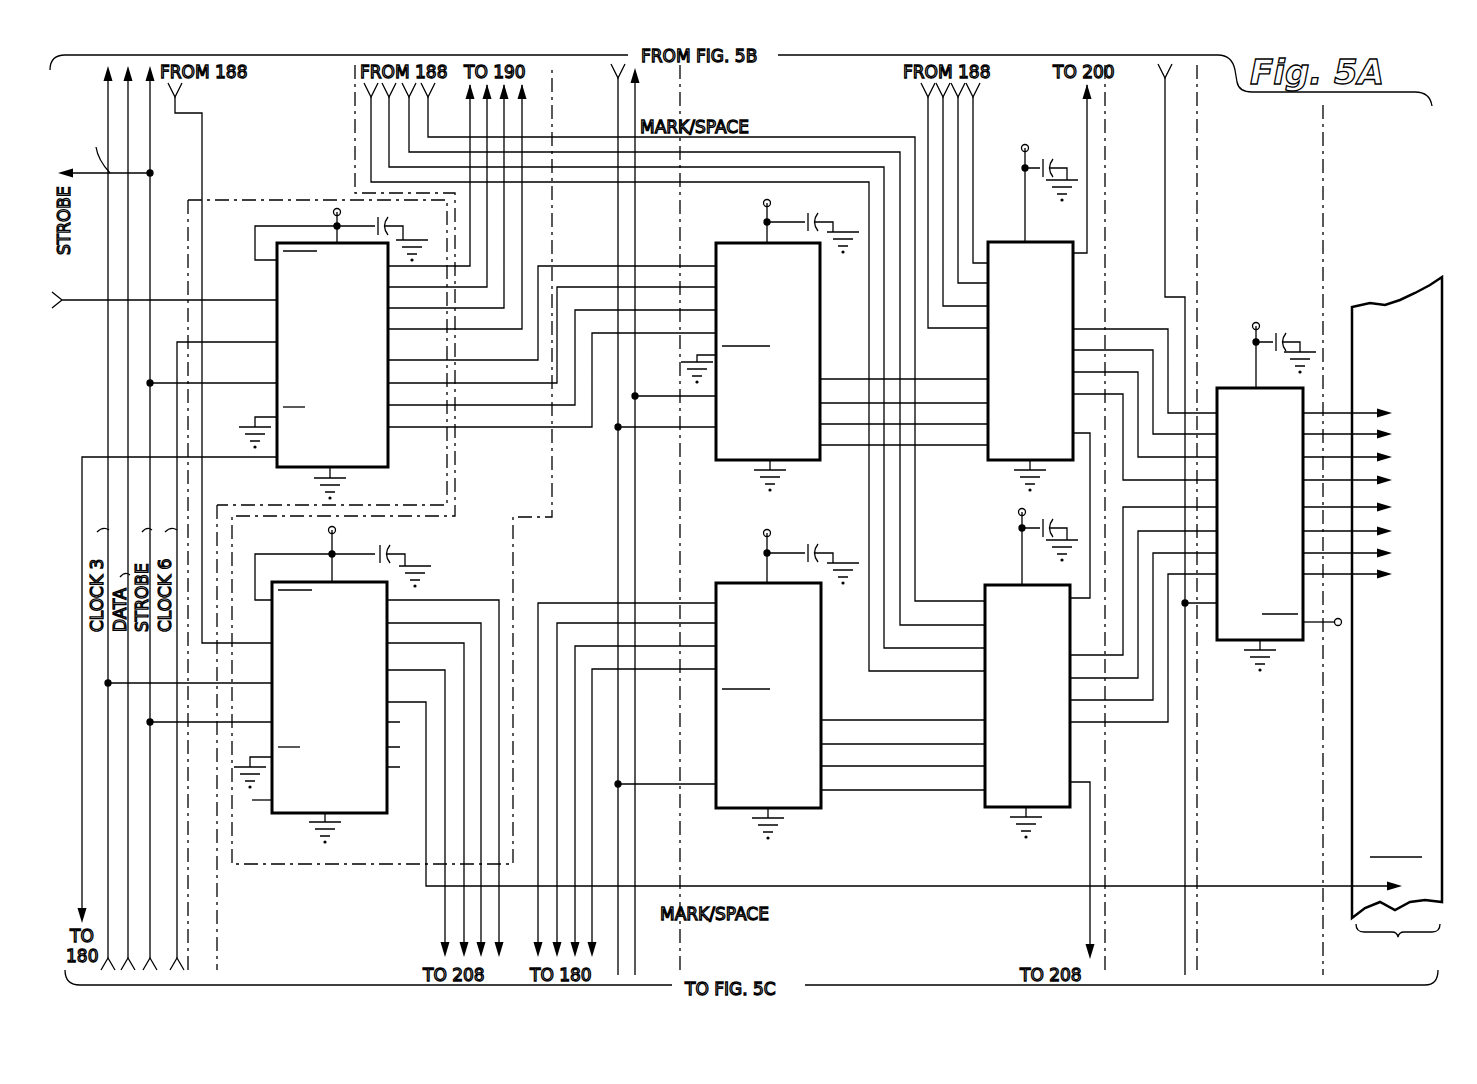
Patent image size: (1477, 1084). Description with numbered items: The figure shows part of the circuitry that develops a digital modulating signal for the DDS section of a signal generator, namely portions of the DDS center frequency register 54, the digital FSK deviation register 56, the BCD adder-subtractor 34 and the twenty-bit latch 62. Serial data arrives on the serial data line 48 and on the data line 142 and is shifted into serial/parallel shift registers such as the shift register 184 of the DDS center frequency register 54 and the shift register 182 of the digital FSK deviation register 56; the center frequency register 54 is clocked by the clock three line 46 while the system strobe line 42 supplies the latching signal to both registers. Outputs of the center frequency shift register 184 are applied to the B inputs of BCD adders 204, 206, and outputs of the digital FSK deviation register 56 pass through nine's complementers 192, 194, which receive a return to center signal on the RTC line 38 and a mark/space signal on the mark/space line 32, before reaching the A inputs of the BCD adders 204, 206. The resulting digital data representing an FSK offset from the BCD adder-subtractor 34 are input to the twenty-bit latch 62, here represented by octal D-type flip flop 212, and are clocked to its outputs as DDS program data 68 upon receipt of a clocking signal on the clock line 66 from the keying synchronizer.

The clock 3 line 46 is at (108, 94).
The serial data line 48 is at (128, 110).
The system strobe line 42 is at (150, 128).
The data line 142 is at (98, 304).
The digital FSK deviation register 56 is at (230, 200).
The DDS center frequency register 54 is at (355, 102).
The RTC line 38 is at (618, 118).
The mark/space line 32 is at (652, 90).
The 20-bit latch 62 is at (1323, 210).
The clock line 66 is at (1165, 118).
The serial/parallel shift register 182 is at (355, 472).
The serial/parallel shift register 184 is at (350, 818).
The 9's complementer 192 is at (745, 465).
The 9's complementer 194 is at (745, 812).
The BCD adder 204 is at (1010, 465).
The BCD adder 206 is at (1008, 812).
The octal D-type flip flop 212 is at (1290, 645).
The DDS program data 68 is at (1397, 618).
The BCD adder-subtractor 34 is at (1105, 952).